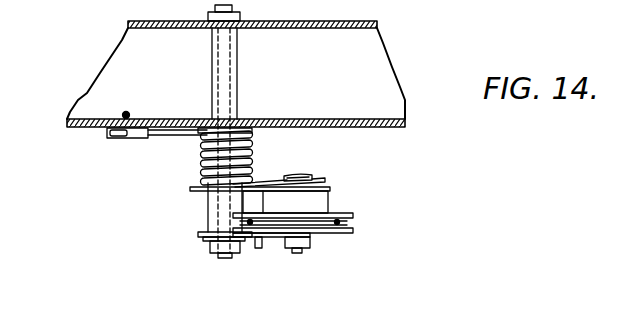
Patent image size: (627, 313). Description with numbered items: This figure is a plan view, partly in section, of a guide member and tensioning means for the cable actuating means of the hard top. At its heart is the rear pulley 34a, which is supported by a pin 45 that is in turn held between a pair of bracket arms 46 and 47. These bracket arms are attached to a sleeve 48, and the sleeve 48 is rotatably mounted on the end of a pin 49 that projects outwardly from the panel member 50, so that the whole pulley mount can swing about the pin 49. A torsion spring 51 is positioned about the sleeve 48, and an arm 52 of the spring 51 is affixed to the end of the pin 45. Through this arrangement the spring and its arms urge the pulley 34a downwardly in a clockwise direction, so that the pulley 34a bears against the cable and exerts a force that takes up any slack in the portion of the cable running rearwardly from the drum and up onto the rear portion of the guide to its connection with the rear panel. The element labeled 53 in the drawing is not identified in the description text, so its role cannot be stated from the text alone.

The rear pulley 34a is at (330, 213).
The pin 45 is at (302, 251).
The bracket arm 46 is at (256, 238).
The bracket arm 47 is at (265, 186).
The sleeve 48 is at (220, 210).
The pin 49 is at (226, 80).
The panel member 50 is at (288, 128).
The torsion spring 51 is at (203, 162).
The spring arm 52 is at (160, 137).
The switch button 53 is at (312, 177).